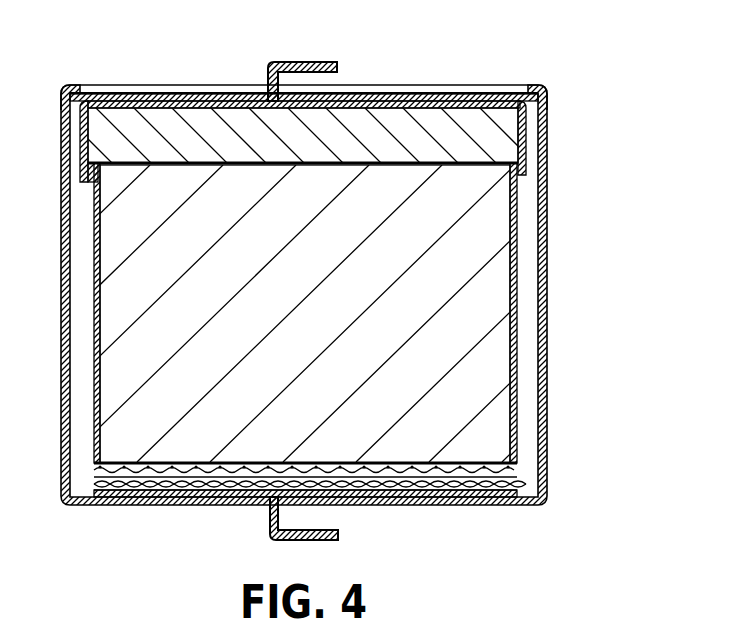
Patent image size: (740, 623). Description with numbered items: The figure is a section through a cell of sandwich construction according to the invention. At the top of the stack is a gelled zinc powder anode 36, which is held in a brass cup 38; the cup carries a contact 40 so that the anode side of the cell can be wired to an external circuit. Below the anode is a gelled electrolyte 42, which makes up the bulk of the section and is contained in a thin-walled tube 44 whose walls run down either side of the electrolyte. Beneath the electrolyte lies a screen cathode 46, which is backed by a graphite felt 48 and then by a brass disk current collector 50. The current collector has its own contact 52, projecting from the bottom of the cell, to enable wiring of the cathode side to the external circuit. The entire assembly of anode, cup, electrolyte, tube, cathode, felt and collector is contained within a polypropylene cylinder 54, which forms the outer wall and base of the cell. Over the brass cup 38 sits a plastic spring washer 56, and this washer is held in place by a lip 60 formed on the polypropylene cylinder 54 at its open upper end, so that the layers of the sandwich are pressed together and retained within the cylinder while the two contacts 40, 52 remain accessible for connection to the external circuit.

The gelled zinc powder anode 36 is at (508, 138).
The brass cup 38 is at (165, 108).
The contact 40 is at (303, 62).
The gelled electrolyte 42 is at (482, 256).
The thin-walled tube 44 is at (518, 294).
The screen cathode 46 is at (483, 462).
The graphite felt 48 is at (491, 483).
The brass disk current collector 50 is at (450, 491).
The contact 52 is at (270, 534).
The polypropylene cylinder 54 is at (548, 337).
The plastic spring washer 56 is at (441, 97).
The lip 60 is at (72, 86).